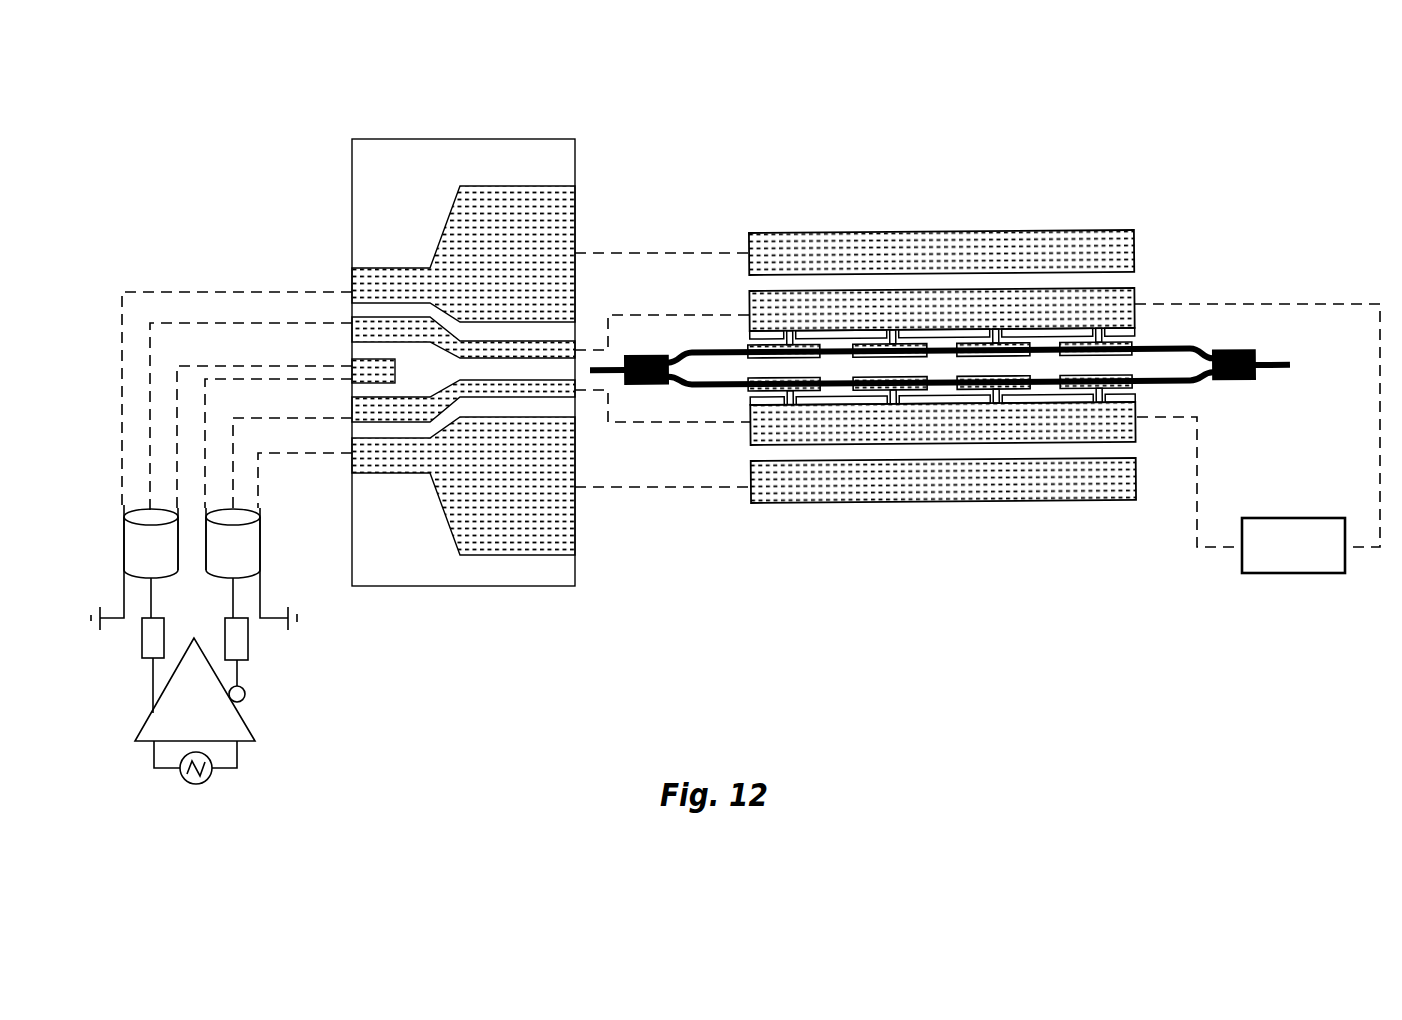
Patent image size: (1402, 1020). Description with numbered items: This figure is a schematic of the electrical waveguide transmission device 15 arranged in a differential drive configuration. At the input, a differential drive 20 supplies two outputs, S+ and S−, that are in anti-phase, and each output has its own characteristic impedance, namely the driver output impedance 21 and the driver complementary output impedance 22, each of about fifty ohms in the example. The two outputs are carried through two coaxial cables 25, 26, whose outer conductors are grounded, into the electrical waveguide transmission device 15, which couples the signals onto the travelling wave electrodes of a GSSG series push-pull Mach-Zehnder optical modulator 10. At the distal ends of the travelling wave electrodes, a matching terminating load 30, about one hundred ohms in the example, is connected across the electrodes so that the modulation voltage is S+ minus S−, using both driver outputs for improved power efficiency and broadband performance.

The optical modulator 10 is at (952, 214).
The electrical waveguide transmission device 15 is at (451, 136).
The differential drive 20 is at (185, 716).
The driver output impedance 21 is at (142, 636).
The driver complementary output impedance 22 is at (248, 641).
The coaxial cable 25 is at (135, 544).
The coaxial cable 26 is at (253, 543).
The matching terminating load 30 is at (1286, 560).